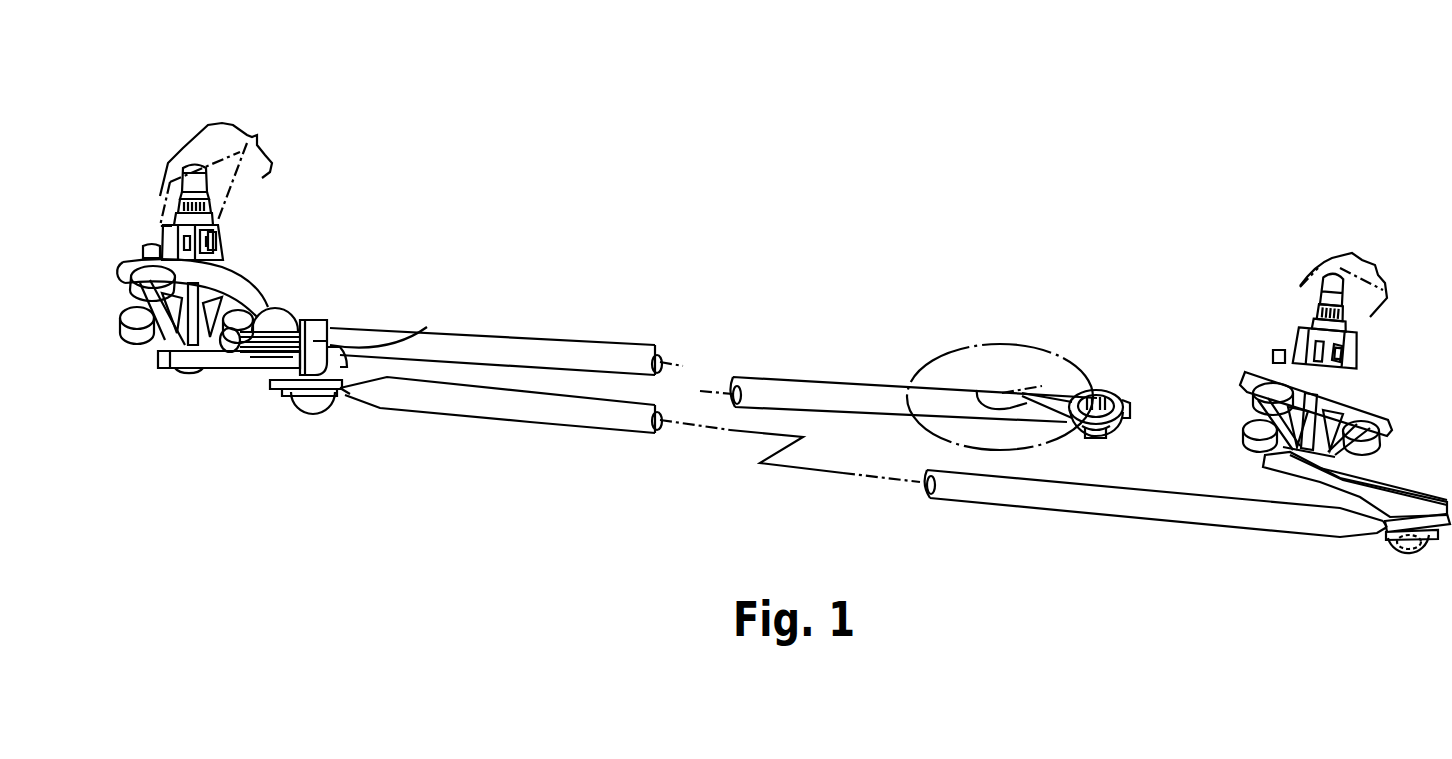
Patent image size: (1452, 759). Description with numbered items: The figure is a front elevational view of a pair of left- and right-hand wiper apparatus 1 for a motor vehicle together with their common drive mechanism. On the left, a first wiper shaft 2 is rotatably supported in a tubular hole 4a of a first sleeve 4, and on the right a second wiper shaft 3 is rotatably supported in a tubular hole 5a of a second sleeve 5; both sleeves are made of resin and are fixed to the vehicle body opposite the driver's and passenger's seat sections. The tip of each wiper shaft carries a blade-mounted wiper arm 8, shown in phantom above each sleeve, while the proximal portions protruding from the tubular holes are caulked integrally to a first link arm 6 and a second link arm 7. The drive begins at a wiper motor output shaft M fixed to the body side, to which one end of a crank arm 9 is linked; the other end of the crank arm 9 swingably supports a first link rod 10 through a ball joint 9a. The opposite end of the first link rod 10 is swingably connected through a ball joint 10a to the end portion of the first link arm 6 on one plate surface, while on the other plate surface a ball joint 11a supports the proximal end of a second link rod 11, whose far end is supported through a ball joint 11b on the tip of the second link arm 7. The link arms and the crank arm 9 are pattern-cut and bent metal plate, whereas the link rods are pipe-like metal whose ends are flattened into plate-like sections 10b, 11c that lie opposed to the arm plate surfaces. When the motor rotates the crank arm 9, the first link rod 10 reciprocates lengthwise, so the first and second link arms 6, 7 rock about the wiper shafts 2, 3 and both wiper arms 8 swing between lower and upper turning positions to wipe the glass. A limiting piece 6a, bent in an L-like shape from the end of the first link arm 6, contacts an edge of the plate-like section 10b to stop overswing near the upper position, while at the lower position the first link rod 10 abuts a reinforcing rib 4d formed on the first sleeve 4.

The wiper apparatus 1 is at (405, 137).
The first wiper shaft 2 is at (206, 176).
The second wiper shaft 3 is at (1342, 287).
The first sleeve 4 is at (240, 273).
The tubular hole 4a is at (225, 238).
The reinforcing rib 4d is at (166, 361).
The second sleeve 5 is at (1262, 370).
The tubular hole 5a is at (1347, 360).
The first link arm 6 is at (243, 362).
The limiting piece 6a is at (427, 327).
The second link arm 7 is at (1370, 483).
The wiper arm 8 is at (210, 143).
The crank arm 9 is at (1000, 392).
The ball joint 9a is at (1103, 436).
The first link rod 10 is at (795, 393).
The ball joint 10a is at (320, 316).
The plate-like section 10b is at (234, 342).
The second link rod 11 is at (586, 413).
The ball joint 11a is at (313, 400).
The ball joint 11b is at (1405, 557).
The plate-like section 11c is at (340, 390).
The wiper motor output shaft M is at (1003, 395).